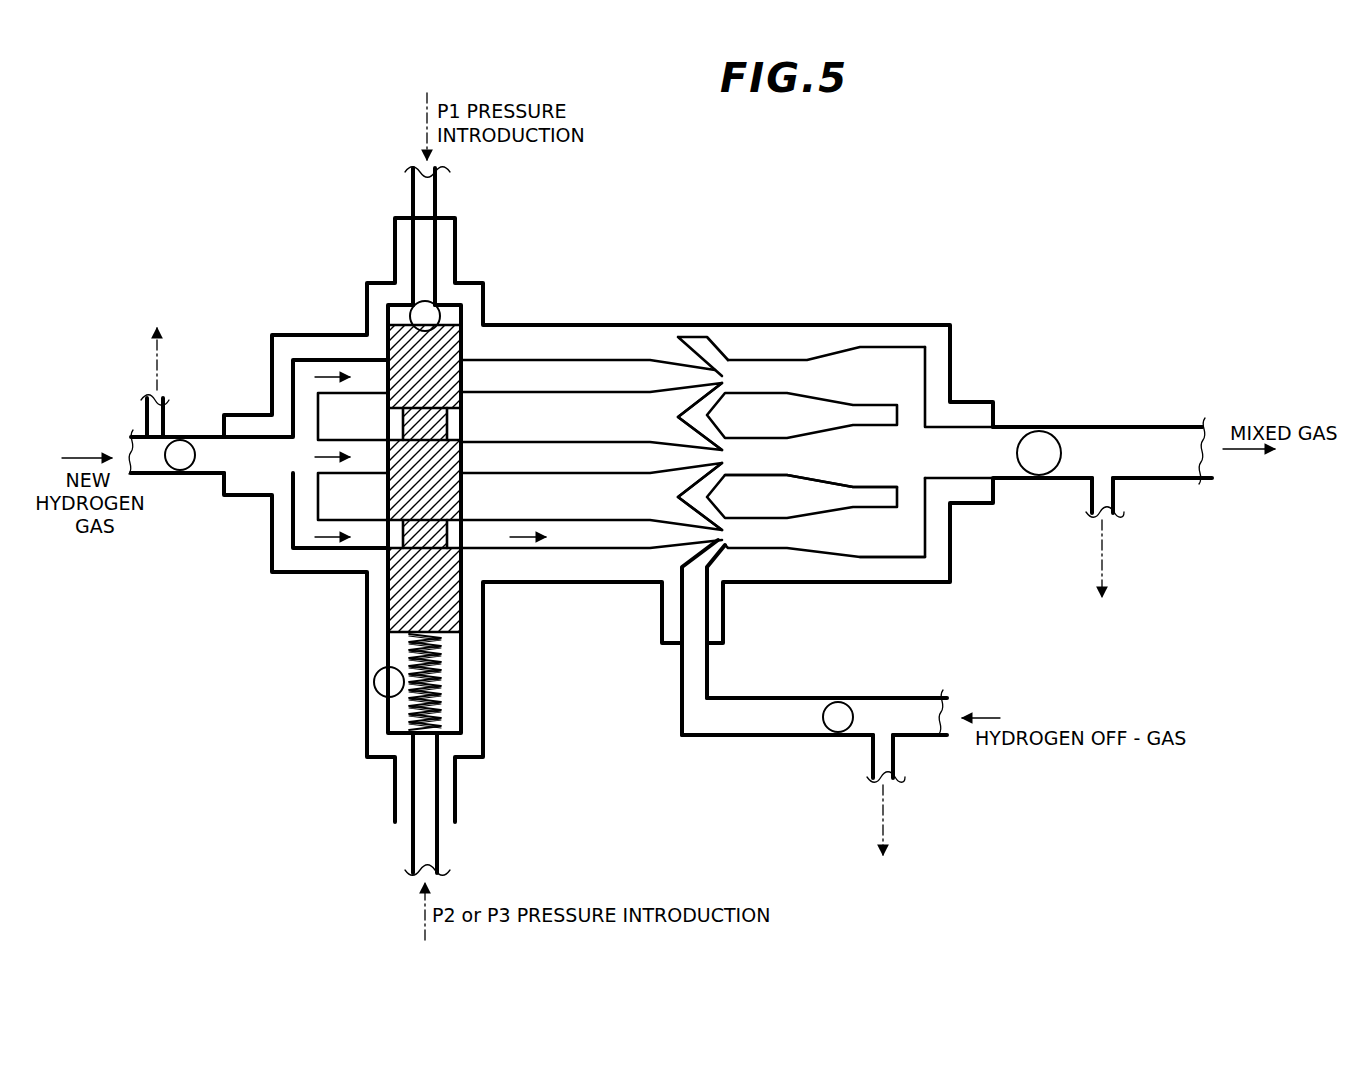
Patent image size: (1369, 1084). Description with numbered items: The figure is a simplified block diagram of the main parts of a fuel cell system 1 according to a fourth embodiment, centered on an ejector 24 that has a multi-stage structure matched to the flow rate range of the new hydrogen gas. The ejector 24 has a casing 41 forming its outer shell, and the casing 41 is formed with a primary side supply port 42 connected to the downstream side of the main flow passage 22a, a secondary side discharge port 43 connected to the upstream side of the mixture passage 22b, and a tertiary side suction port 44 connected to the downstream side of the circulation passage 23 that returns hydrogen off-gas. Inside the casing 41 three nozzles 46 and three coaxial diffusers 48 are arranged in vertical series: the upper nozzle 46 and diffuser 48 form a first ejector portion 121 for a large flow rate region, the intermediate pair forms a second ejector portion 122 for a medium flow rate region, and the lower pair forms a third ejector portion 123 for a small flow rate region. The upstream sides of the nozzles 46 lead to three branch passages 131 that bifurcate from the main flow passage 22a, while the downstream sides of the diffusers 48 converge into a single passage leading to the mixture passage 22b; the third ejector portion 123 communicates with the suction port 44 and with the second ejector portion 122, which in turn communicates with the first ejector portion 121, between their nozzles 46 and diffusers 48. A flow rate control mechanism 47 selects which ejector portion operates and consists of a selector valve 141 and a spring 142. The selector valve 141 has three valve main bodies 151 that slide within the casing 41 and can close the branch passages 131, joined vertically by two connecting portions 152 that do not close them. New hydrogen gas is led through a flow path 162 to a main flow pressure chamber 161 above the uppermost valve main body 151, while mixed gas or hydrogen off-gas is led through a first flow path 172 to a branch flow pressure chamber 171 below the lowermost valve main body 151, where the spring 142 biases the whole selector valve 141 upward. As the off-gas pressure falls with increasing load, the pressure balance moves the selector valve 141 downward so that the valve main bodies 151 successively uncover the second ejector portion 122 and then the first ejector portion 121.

The fuel cell system 1 is at (982, 210).
The main flow passage 22a is at (203, 465).
The mixture passage 22b is at (1157, 443).
The circulation passage 23 is at (913, 710).
The ejector 24 is at (952, 320).
The casing 41 is at (942, 543).
The primary side supply port 42 is at (258, 458).
The secondary side discharge port 43 is at (955, 447).
The tertiary side suction port 44 is at (695, 613).
The nozzle 46 is at (707, 365).
The flow rate control mechanism 47 is at (570, 615).
The diffuser 48 is at (758, 370).
The first ejector portion 121 is at (713, 276).
The second ejector portion 122 is at (923, 276).
The third ejector portion 123 is at (890, 614).
The branch passage 131 is at (365, 368).
The selector valve 141 is at (452, 598).
The spring 142 is at (440, 720).
The valve main body 151 is at (448, 363).
The connecting portion 152 is at (437, 425).
The main flow pressure chamber 161 is at (397, 317).
The flow path 162 is at (417, 195).
The branch flow pressure chamber 171 is at (393, 703).
The first flow path 172 is at (428, 847).